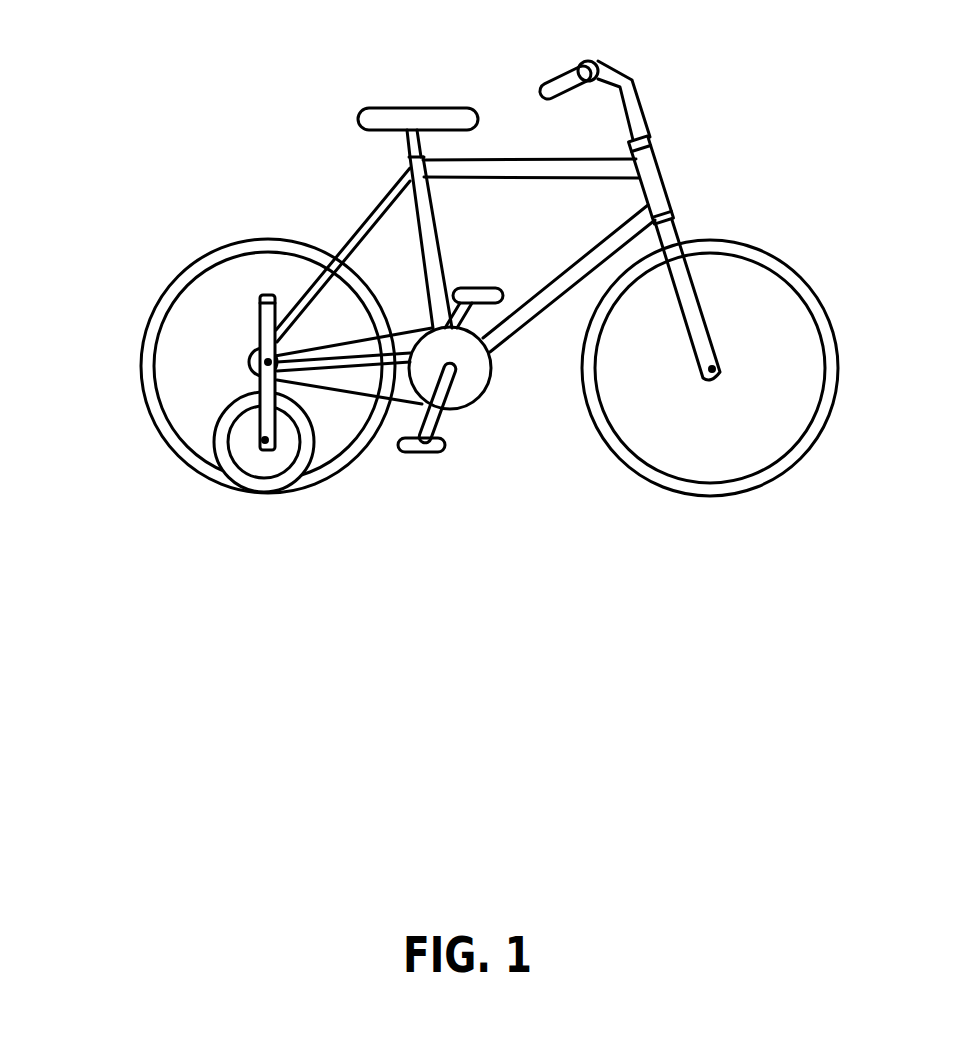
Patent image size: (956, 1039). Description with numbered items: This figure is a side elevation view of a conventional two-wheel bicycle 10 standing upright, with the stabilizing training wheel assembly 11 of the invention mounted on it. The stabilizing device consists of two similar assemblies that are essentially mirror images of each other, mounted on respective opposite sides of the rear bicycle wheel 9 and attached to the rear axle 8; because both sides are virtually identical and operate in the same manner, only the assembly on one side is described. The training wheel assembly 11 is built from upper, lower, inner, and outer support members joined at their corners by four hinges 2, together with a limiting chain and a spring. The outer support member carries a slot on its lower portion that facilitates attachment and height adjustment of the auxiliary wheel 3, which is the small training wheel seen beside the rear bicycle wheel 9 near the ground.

The hinges 2 is at (267, 293).
The auxiliary wheel 3 is at (262, 482).
The rear axle 8 is at (250, 356).
The rear bicycle wheel 9 is at (337, 465).
The bicycle 10 is at (353, 238).
The training wheel assembly 11 is at (258, 334).